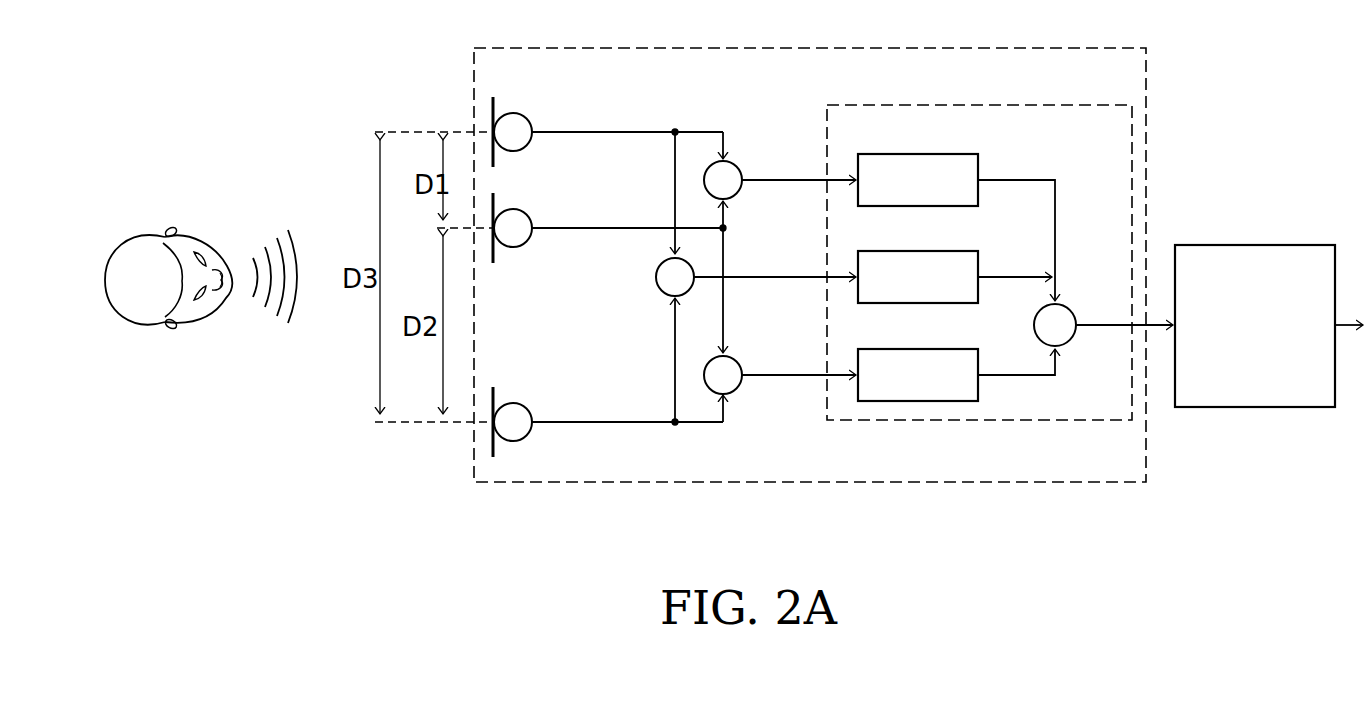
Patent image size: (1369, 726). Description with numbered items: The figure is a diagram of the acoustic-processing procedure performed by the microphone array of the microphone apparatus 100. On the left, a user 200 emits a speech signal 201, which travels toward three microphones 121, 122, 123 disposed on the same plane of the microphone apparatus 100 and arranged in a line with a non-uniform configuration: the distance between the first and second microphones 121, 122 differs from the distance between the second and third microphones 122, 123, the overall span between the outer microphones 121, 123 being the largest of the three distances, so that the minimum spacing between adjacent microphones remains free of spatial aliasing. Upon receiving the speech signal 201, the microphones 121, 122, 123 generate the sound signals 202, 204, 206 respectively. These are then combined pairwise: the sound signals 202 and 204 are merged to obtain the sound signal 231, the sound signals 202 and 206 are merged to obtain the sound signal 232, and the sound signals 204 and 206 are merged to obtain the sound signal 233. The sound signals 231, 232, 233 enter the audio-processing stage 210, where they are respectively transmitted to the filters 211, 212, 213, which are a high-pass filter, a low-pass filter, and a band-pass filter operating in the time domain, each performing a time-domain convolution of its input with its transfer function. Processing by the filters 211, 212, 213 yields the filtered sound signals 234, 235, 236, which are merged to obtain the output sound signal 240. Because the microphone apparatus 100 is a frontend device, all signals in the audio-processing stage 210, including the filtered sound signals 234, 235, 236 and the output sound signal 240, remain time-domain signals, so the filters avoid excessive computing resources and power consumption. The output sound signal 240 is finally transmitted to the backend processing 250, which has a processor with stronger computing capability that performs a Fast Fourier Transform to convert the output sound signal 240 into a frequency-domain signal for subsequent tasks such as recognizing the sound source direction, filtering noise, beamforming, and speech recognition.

The microphone apparatus 100 is at (475, 46).
The microphone 121 is at (512, 114).
The microphone 122 is at (512, 210).
The microphone 123 is at (512, 403).
The user 200 is at (143, 232).
The speech signal 201 is at (270, 243).
The sound signal 202 is at (628, 130).
The sound signal 204 is at (628, 226).
The sound signal 206 is at (628, 420).
The audio-processing stage 210 is at (829, 103).
The filter 211 is at (860, 152).
The filter 212 is at (860, 249).
The filter 213 is at (860, 347).
The sound signal 231 is at (786, 177).
The sound signal 232 is at (786, 274).
The sound signal 233 is at (786, 372).
The filtered sound signal 234 is at (1001, 177).
The filtered sound signal 235 is at (1001, 274).
The filtered sound signal 236 is at (1001, 372).
The output sound signal 240 is at (1097, 322).
The backend processing 250 is at (1176, 244).